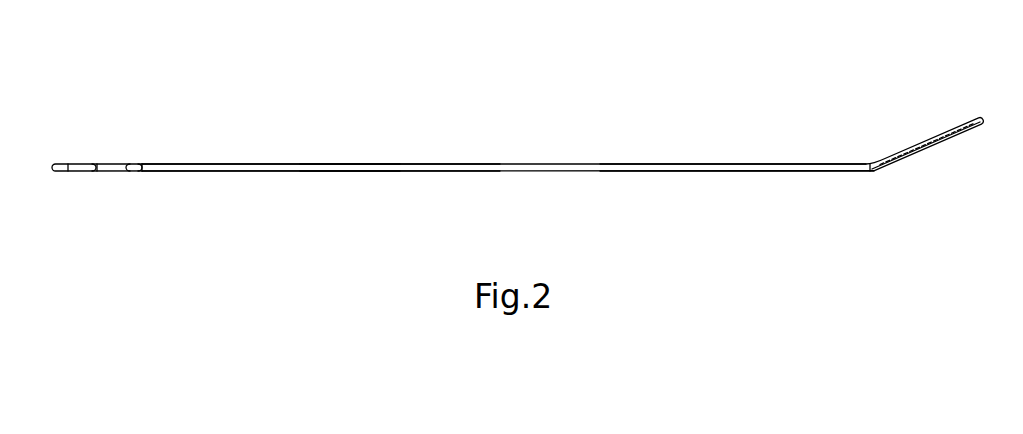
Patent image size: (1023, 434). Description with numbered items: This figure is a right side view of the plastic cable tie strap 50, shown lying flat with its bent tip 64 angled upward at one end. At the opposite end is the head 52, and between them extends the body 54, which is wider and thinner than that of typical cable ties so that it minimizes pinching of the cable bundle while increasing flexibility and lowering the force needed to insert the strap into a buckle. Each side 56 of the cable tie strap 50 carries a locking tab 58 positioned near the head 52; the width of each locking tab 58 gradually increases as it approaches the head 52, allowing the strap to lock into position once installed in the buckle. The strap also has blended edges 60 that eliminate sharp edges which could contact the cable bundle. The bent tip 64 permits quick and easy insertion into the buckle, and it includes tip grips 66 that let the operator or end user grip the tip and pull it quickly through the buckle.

The cable tie strap 50 is at (555, 122).
The head 52 is at (77, 168).
The body 54 is at (357, 168).
The side 56 is at (258, 168).
The locking tab 58 is at (135, 168).
The blended edges 60 is at (748, 170).
The bent tip 64 is at (928, 143).
The tip grips 66 is at (920, 150).